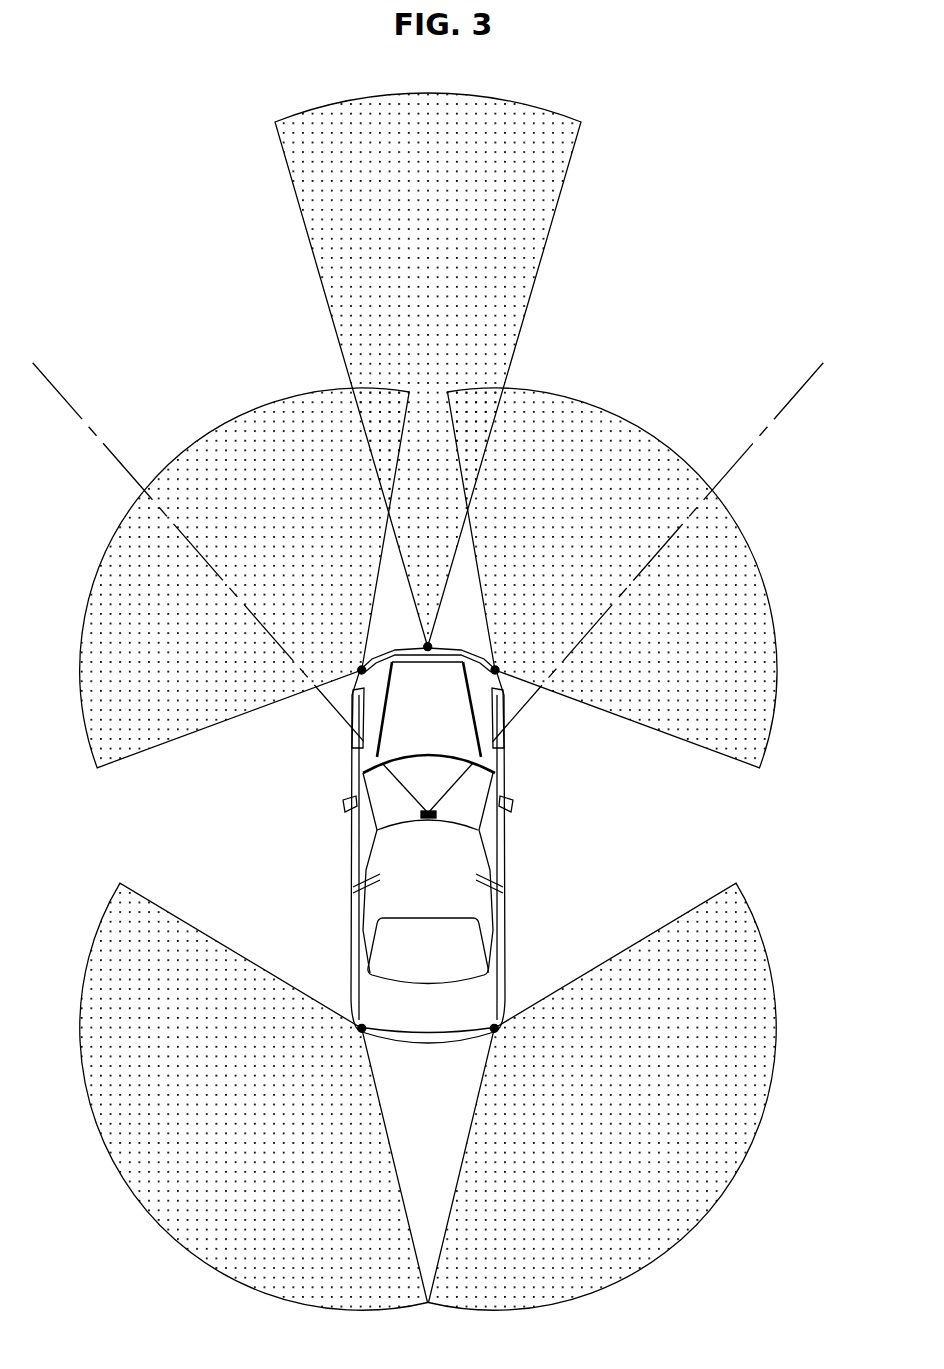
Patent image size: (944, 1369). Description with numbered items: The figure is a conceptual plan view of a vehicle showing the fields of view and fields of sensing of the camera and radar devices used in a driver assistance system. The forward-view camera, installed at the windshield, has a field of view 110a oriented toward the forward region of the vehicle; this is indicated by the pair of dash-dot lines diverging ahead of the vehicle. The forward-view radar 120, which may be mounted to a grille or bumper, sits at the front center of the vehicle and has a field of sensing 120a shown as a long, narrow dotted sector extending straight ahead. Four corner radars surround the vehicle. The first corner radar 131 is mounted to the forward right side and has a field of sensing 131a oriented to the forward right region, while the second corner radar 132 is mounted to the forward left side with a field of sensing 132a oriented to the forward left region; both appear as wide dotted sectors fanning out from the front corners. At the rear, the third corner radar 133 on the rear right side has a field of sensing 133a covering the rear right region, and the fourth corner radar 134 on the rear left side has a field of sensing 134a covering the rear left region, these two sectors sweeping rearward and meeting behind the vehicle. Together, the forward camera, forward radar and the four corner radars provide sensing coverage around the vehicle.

The field of view 110a is at (778, 415).
The forward-view radar 120 is at (429, 646).
The field of sensing 120a is at (521, 243).
The first corner radar 131 is at (496, 669).
The field of sensing 131a is at (642, 450).
The second corner radar 132 is at (361, 669).
The field of sensing 132a is at (215, 447).
The third corner radar 133 is at (495, 1029).
The field of sensing 133a is at (720, 1182).
The fourth corner radar 134 is at (361, 1029).
The field of sensing 134a is at (137, 1182).